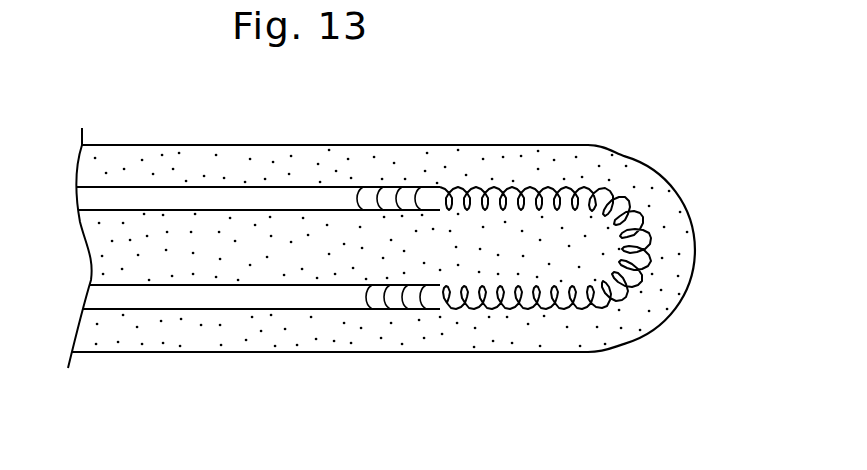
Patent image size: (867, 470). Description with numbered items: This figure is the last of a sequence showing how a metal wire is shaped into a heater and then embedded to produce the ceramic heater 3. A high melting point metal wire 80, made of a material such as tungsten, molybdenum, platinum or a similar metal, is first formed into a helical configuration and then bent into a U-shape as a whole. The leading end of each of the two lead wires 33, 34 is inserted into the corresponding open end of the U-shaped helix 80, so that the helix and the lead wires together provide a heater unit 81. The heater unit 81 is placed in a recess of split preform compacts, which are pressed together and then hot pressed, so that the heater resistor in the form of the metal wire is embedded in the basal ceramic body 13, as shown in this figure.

The insertion portion distal end 3 is at (419, 118).
The outer sheath 13 is at (275, 168).
The lead wire 33 is at (175, 197).
The lead wire 34 is at (175, 300).
The high melting point metal wire 80 is at (600, 192).
The heater unit 81 is at (373, 333).